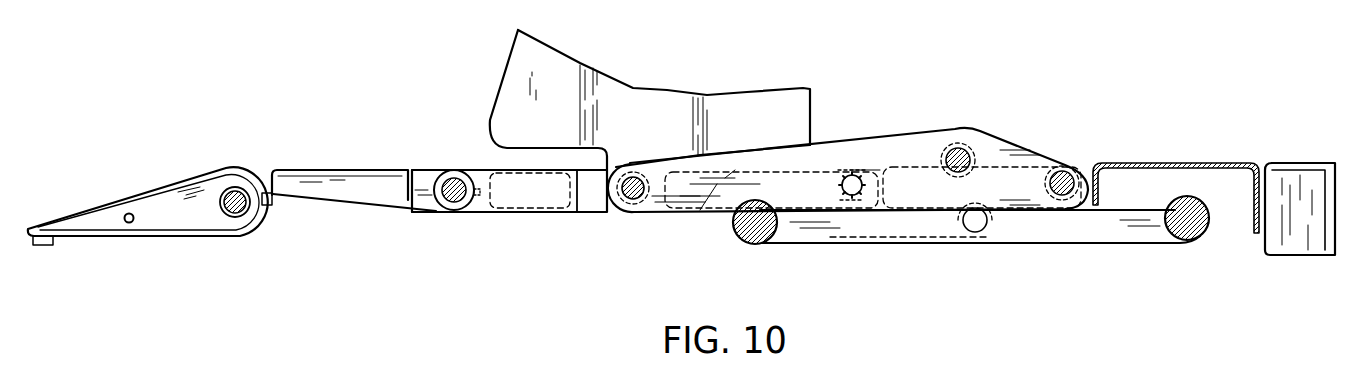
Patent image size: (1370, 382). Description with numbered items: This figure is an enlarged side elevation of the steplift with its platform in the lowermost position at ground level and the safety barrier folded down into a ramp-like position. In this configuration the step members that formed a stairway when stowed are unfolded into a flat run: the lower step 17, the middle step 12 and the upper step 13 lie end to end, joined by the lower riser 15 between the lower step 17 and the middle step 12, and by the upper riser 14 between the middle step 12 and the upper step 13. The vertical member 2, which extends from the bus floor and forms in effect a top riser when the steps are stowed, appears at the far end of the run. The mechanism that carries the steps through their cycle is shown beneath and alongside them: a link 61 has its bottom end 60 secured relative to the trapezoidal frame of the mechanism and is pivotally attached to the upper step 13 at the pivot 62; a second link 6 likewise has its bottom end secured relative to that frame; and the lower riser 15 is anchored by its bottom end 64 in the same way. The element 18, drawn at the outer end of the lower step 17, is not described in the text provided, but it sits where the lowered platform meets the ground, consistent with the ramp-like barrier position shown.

The vertical member 2 is at (1297, 188).
The link 6 is at (1035, 142).
The middle step 12 is at (717, 184).
The upper step 13 is at (1148, 163).
The upper riser 14 is at (880, 146).
The lower riser 15 is at (548, 203).
The lower step 17 is at (353, 183).
The toe piece 18 is at (197, 223).
The bottom end of link 61 60 is at (737, 238).
The link 61 is at (1090, 229).
The pivotal attachment 62 is at (1205, 238).
The bottom end of riser 15 64 is at (452, 211).